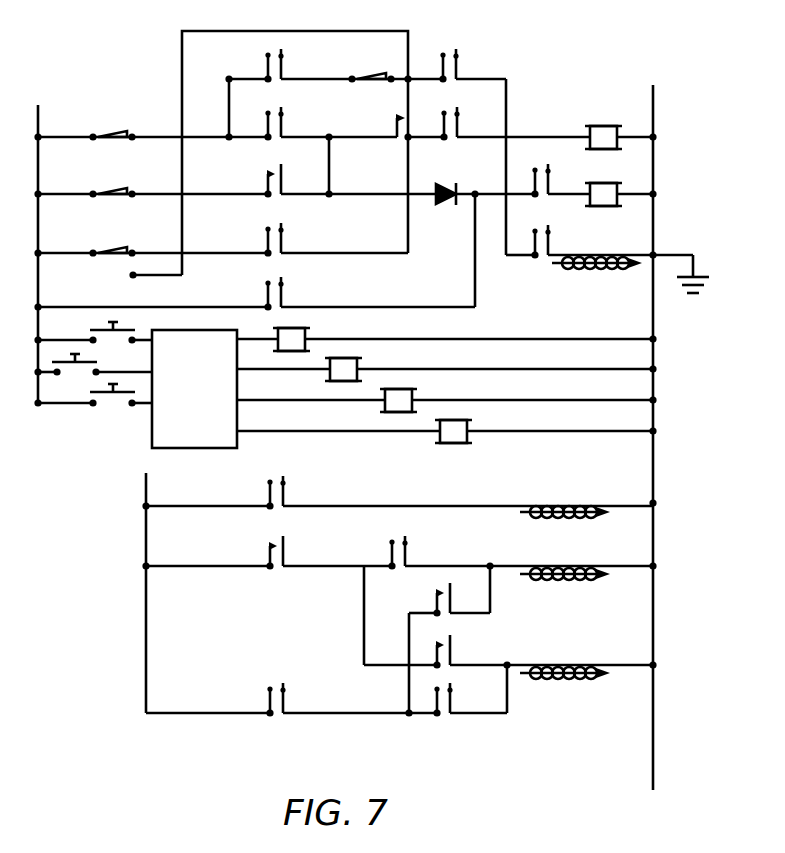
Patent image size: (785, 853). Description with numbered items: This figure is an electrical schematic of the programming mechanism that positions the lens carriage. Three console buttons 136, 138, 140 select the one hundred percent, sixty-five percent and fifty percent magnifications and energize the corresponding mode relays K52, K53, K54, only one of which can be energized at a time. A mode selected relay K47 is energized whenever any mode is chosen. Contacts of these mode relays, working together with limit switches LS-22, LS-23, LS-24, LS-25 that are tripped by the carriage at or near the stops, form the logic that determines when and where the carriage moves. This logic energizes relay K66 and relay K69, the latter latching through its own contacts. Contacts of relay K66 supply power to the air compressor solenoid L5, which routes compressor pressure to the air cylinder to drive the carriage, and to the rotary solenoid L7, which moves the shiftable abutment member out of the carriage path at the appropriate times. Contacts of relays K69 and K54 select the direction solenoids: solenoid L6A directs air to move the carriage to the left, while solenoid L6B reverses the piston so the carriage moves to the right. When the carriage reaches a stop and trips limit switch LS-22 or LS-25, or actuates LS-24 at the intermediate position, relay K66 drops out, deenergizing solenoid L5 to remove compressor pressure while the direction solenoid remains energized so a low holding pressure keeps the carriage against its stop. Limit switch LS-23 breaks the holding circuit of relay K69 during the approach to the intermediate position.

The 100 percent button 136 is at (97, 328).
The 65 percent button 138 is at (103, 355).
The 50 percent button 140 is at (97, 391).
The limit switch LS-22 is at (109, 125).
The limit switch LS-23 is at (363, 67).
The limit switch LS-24 is at (109, 182).
The limit switch LS-25 is at (109, 241).
The mode relay K52 is at (311, 333).
The mode relay K53 is at (365, 365).
The mode relay K54 is at (421, 395).
The mode selected relay K47 is at (473, 427).
The relay K66 is at (604, 124).
The relay K69 is at (602, 181).
The air compressor solenoid L5 is at (565, 497).
The solenoid L6A is at (565, 559).
The solenoid L6B is at (565, 684).
The rotary solenoid L7 is at (597, 247).